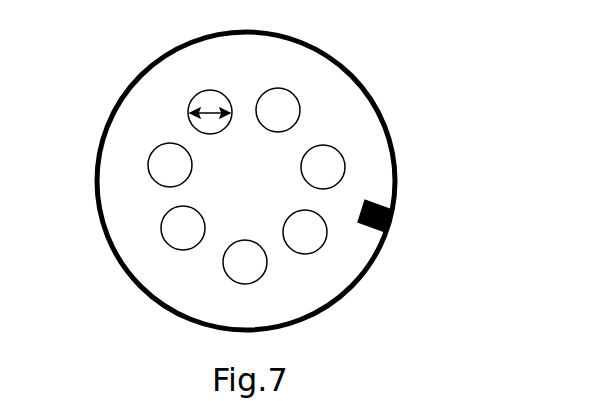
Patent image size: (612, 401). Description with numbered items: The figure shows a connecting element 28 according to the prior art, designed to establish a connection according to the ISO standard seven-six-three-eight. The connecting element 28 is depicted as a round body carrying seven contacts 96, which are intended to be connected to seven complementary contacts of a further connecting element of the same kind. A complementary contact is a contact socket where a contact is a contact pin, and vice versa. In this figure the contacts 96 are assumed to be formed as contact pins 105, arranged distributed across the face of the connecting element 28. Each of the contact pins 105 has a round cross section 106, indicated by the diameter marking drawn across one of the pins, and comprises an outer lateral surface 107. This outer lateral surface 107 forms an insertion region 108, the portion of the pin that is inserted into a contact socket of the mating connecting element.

The connecting element 28 is at (462, 197).
The contacts 96 is at (194, 101).
The contact pins 105 is at (260, 97).
The round cross section 106 is at (213, 110).
The outer lateral surface 107 is at (301, 167).
The insertion region 108 is at (347, 172).